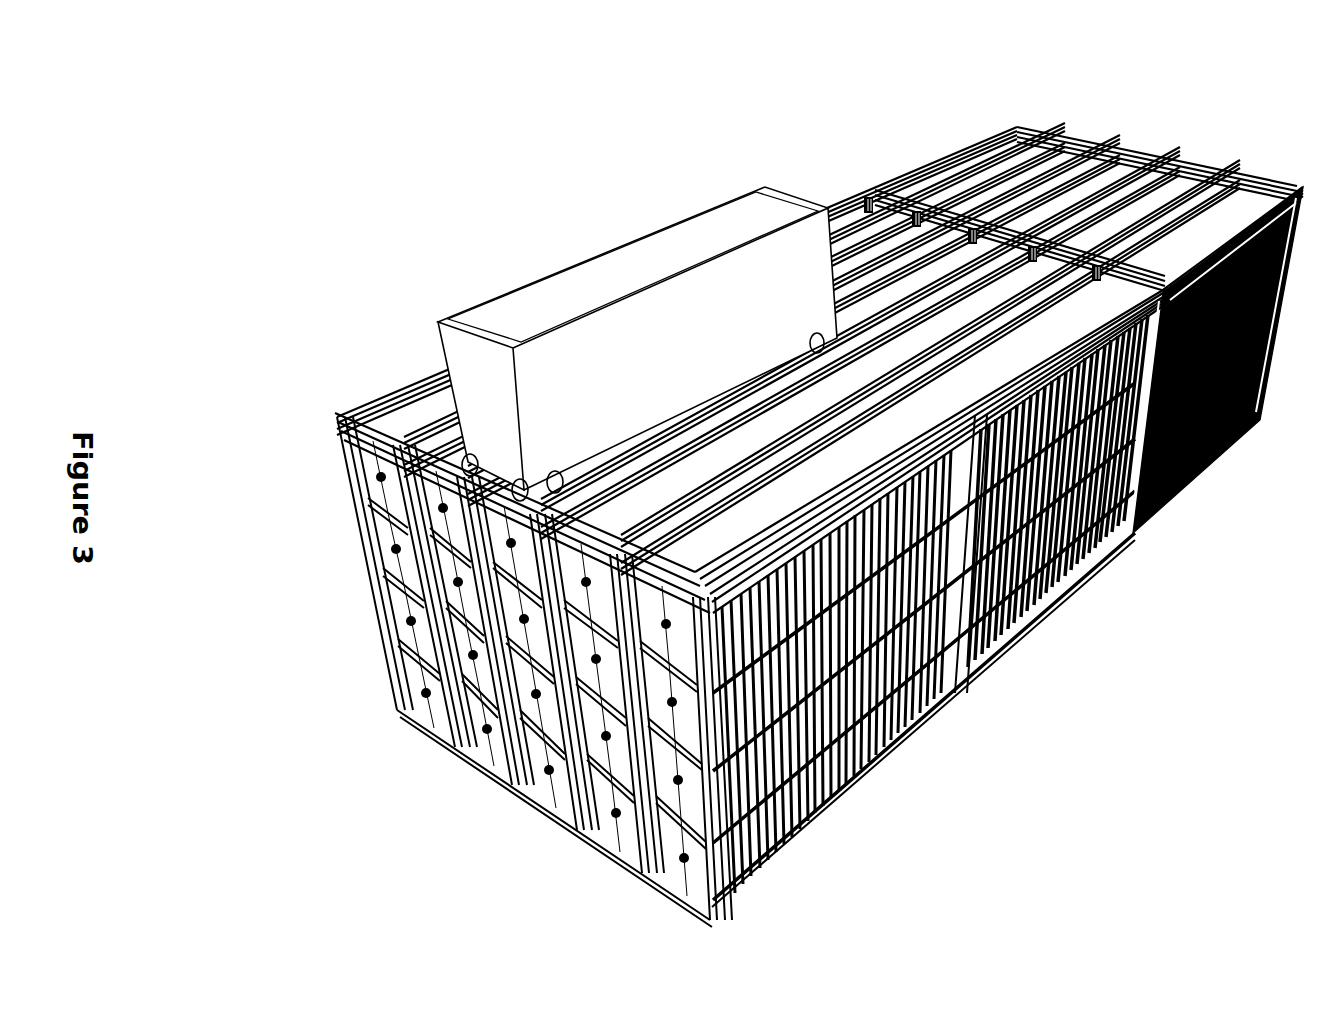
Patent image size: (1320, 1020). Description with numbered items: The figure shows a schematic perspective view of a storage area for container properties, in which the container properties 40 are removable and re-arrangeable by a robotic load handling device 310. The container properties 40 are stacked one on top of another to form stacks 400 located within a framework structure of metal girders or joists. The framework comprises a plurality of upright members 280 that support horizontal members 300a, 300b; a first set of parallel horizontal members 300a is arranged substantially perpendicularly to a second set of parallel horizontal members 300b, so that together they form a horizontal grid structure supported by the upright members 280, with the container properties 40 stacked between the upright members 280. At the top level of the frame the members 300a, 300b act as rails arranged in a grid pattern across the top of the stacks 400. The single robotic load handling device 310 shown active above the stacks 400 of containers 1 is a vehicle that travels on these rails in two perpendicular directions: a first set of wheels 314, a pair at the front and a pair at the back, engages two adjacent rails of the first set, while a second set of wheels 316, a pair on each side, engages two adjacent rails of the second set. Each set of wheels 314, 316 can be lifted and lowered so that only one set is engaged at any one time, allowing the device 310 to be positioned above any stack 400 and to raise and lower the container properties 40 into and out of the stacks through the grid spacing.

The container 1 is at (819, 468).
The container property 40 is at (467, 668).
The upright member 280 is at (988, 668).
The first set of parallel horizontal members 300a is at (902, 262).
The second set of parallel horizontal members 300b is at (968, 272).
The robotic load handling device 310 is at (747, 293).
The first set of wheels 314 is at (470, 455).
The second set of wheels 316 is at (558, 472).
The stack 400 is at (1120, 543).